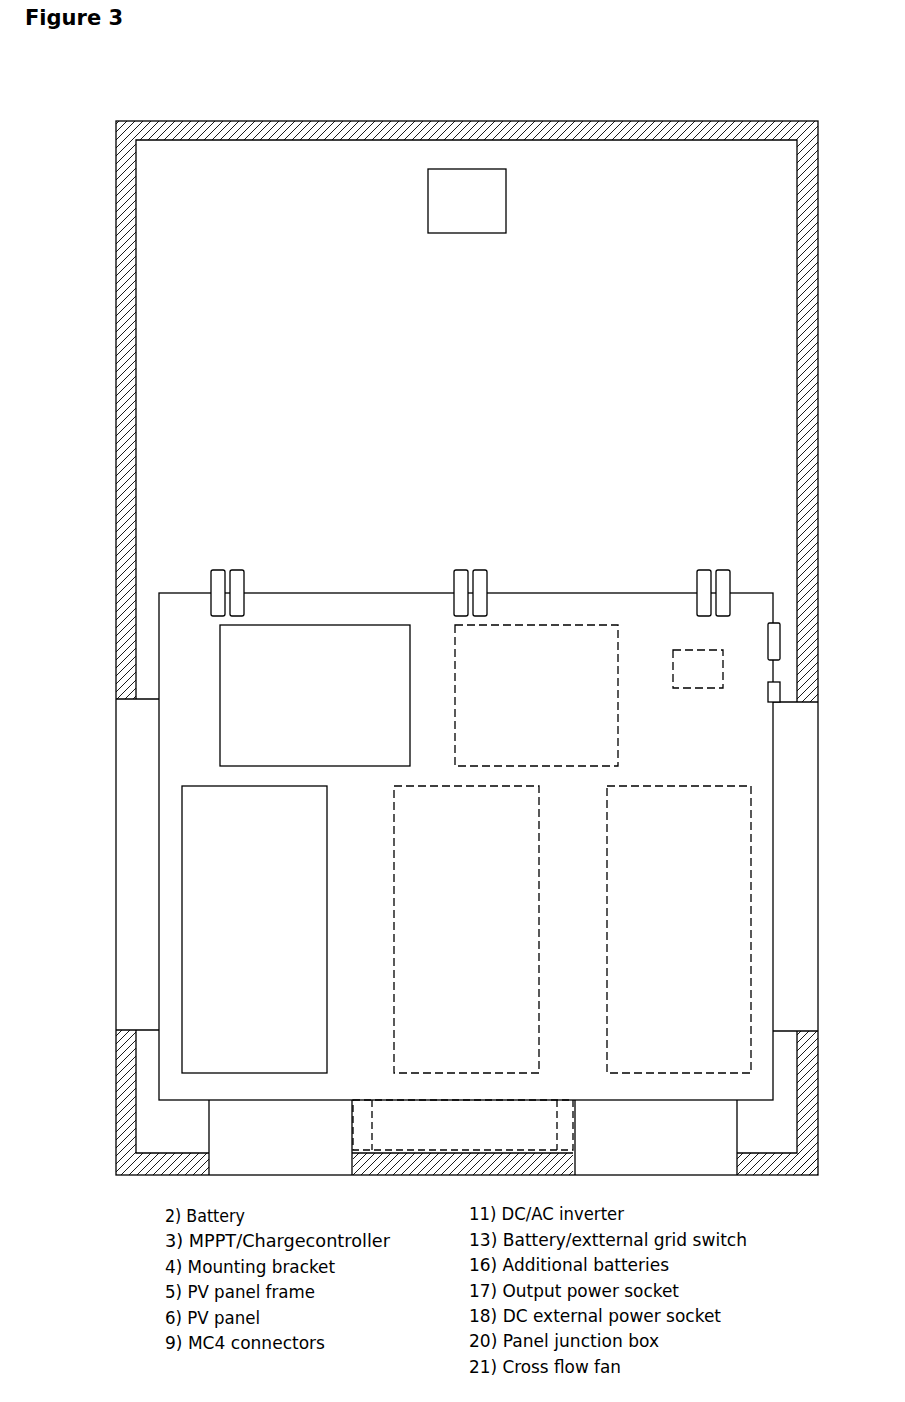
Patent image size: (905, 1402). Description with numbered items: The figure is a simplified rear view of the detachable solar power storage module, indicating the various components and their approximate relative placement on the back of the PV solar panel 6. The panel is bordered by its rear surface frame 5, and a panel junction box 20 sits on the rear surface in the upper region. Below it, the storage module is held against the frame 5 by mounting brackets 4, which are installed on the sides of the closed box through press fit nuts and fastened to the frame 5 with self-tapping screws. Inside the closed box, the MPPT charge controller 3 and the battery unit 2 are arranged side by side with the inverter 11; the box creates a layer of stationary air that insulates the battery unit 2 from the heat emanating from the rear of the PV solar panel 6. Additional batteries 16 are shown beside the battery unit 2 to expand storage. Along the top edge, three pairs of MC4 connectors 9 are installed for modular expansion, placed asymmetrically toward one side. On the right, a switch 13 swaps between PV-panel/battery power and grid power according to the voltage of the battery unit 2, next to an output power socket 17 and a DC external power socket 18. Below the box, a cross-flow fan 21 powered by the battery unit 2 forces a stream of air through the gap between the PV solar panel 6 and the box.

The battery unit 2 is at (254, 929).
The MPPT charge controller 3 is at (315, 695).
The mounting bracket 4 is at (467, 937).
The rear surface frame 5 is at (467, 638).
The PV solar panel 6 is at (466, 646).
The MC4 connectors 9 is at (470, 581).
The inverter 11 is at (536, 695).
The switch 13 is at (698, 669).
The additional batteries 16 is at (572, 929).
The output power socket 17 is at (762, 641).
The DC external power socket 18 is at (761, 691).
The panel junction box 20 is at (467, 201).
The cross-flow fan 21 is at (463, 1125).